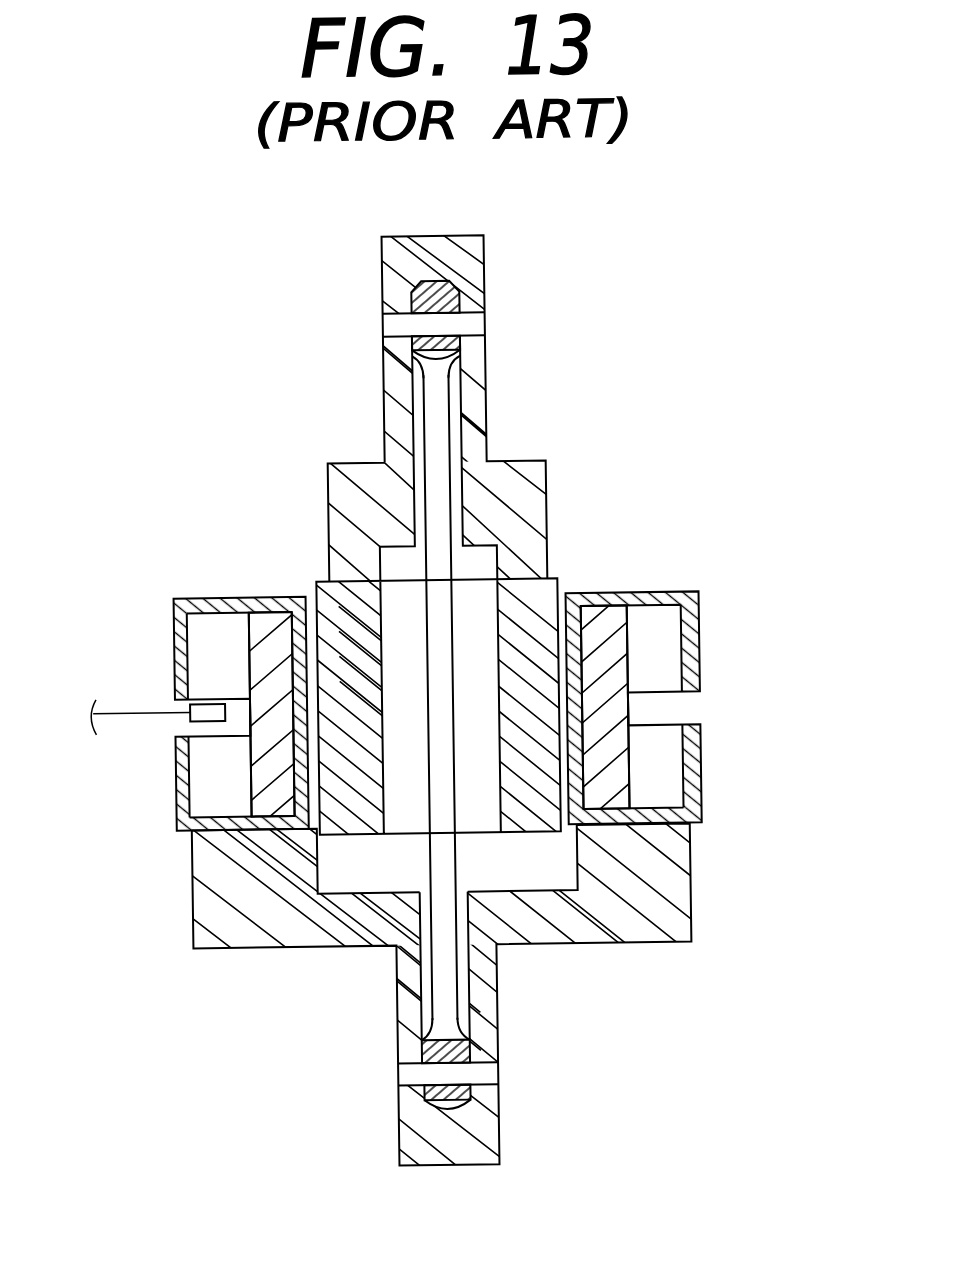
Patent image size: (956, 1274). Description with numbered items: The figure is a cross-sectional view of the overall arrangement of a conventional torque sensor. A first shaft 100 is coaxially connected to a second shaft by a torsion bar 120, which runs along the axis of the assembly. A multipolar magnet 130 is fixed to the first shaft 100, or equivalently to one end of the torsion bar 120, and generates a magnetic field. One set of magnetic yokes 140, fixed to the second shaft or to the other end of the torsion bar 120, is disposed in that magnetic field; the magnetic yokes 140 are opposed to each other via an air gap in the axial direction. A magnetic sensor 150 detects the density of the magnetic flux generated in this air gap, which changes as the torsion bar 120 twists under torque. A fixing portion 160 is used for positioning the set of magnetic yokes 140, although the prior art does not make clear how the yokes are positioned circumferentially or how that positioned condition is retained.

The first shaft 100 is at (480, 273).
The torsion bar 120 is at (442, 412).
The multipolar magnet 130 is at (537, 594).
The magnetic yokes 140 is at (694, 660).
The magnetic sensor 150 is at (190, 711).
The fixing portion 160 is at (616, 634).